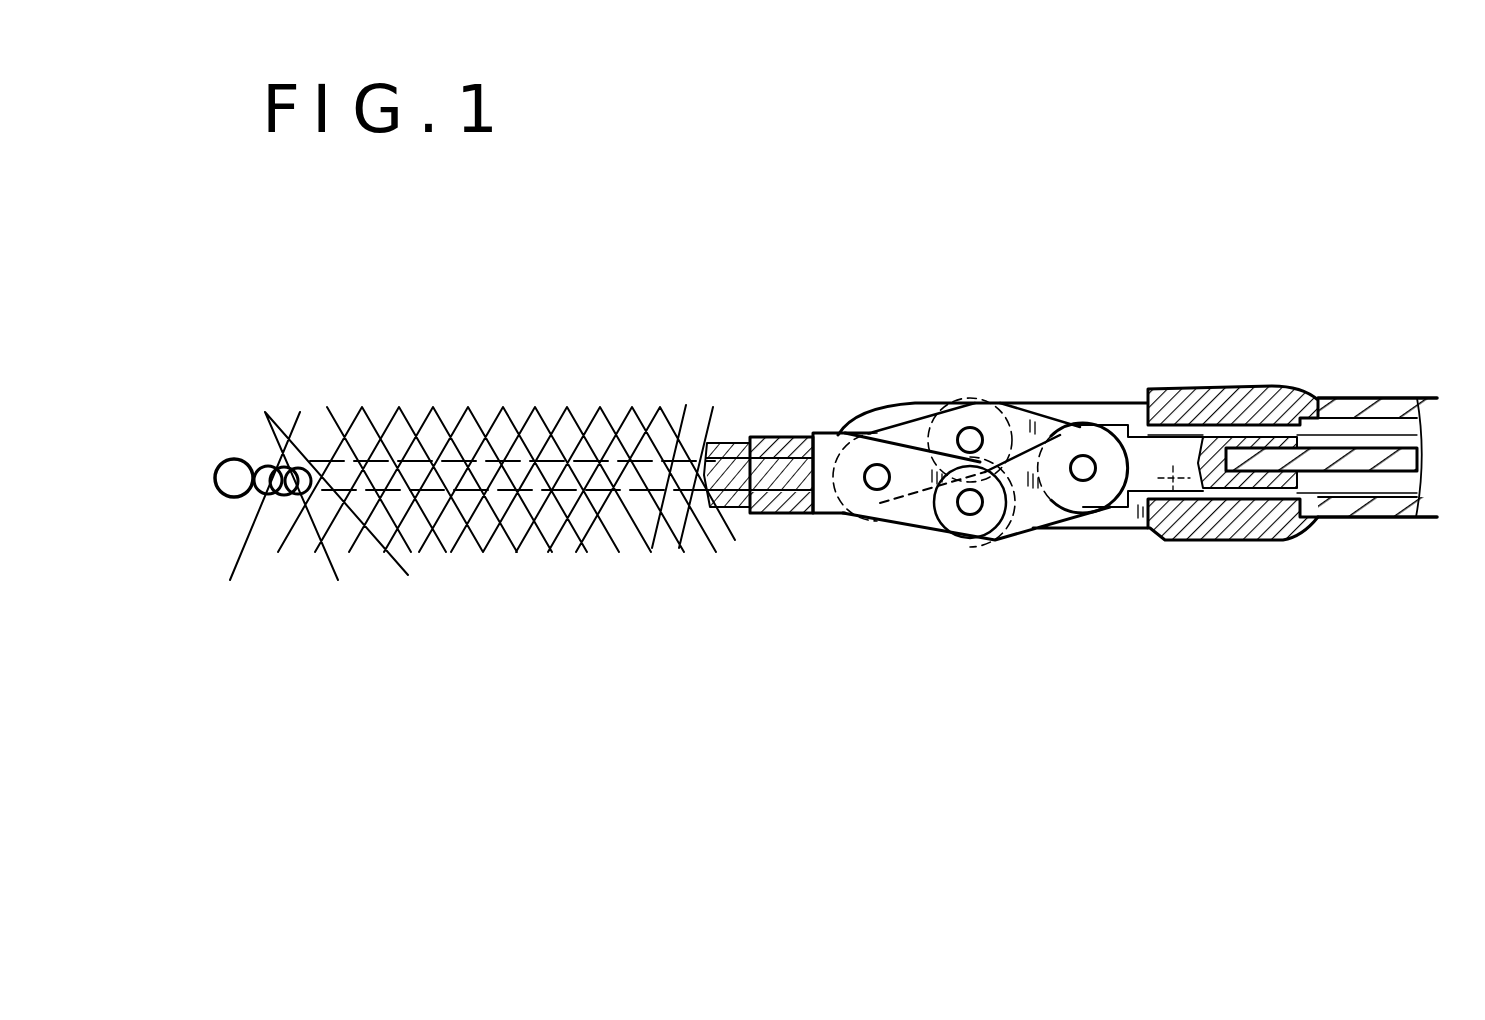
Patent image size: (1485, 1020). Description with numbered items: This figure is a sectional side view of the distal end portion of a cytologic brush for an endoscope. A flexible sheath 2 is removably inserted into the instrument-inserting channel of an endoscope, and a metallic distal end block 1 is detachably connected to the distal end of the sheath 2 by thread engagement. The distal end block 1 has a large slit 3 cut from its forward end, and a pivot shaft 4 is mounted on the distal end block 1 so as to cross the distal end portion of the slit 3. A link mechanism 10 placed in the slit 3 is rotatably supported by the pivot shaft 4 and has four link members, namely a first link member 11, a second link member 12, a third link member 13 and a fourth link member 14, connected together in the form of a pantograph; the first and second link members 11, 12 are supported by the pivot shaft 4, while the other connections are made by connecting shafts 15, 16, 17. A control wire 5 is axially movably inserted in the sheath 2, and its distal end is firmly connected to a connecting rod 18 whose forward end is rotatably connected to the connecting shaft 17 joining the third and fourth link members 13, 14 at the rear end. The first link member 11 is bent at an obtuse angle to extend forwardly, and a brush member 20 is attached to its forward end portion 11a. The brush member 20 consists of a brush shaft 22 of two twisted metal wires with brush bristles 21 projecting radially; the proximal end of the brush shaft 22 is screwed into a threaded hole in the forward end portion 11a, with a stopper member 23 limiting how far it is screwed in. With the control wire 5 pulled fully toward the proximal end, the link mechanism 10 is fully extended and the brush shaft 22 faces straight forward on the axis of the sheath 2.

The distal end block 1 is at (1163, 388).
The flexible sheath 2 is at (1368, 397).
The slit 3 is at (1084, 531).
The pivot shaft 4 is at (877, 482).
The control wire 5 is at (1372, 470).
The link mechanism 10 is at (938, 368).
The first link member 11 is at (918, 518).
The forward end portion 11a is at (783, 437).
The second link member 12 is at (905, 428).
The third link member 13 is at (1020, 532).
The fourth link member 14 is at (1022, 412).
The connecting shaft 15 is at (969, 508).
The connecting shaft 16 is at (970, 430).
The connecting shaft 17 is at (1087, 474).
The connecting rod 18 is at (1173, 482).
The brush member 20 is at (556, 359).
The brush bristles 21 is at (385, 550).
The brush shaft 22 is at (275, 497).
The stopper member 23 is at (727, 441).